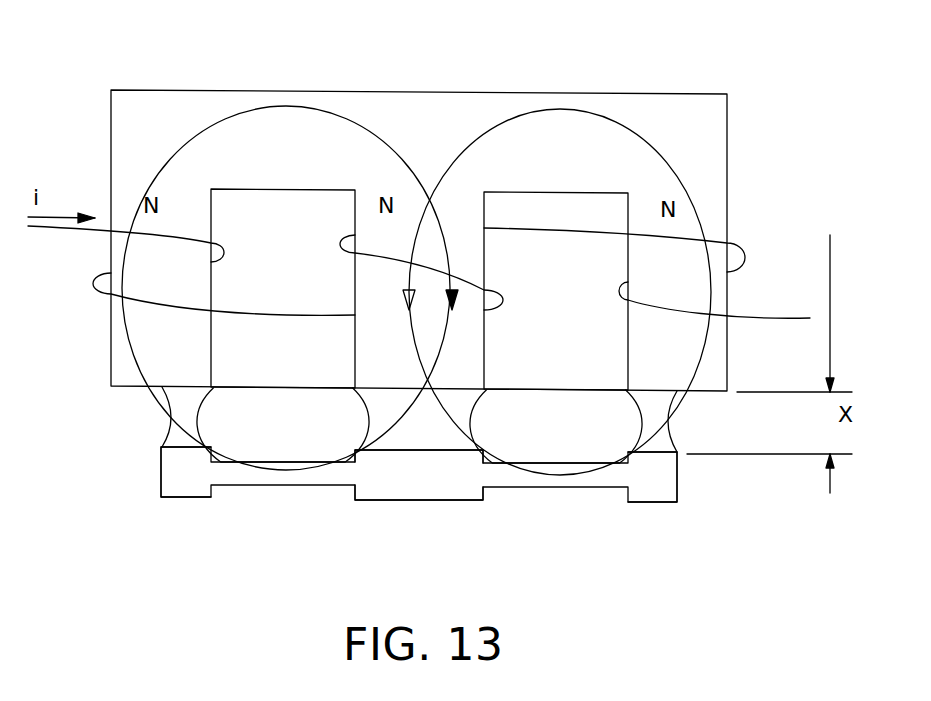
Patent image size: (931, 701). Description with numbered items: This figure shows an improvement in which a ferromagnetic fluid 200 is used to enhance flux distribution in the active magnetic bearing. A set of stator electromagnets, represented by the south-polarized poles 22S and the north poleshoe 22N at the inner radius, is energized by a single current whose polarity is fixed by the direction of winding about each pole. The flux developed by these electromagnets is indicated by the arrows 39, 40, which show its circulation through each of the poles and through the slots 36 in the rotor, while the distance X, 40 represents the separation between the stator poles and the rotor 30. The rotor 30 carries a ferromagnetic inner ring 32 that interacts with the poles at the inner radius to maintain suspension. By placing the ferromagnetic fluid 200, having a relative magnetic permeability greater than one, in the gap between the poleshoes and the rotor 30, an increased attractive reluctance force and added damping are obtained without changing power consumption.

The south-polarized electromagnet pole 22S is at (419, 240).
The north poleshoe at inner radius 22N is at (419, 263).
The flux arrow 39 is at (331, 113).
The flux arrow / pole-to-rotor separation 40 is at (565, 110).
The ferromagnetic fluid 200 is at (170, 417).
The rotor 30 is at (160, 481).
The inner ring 32 is at (413, 490).
The slots 36 is at (186, 488).